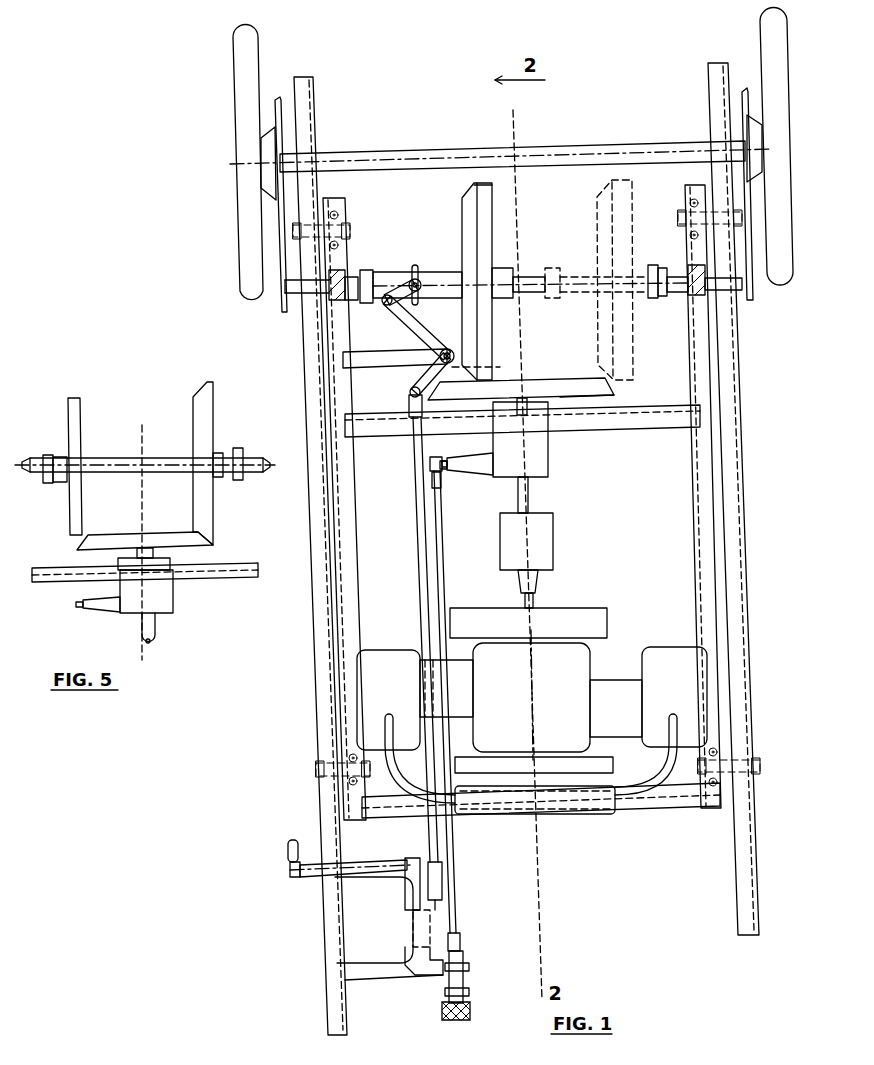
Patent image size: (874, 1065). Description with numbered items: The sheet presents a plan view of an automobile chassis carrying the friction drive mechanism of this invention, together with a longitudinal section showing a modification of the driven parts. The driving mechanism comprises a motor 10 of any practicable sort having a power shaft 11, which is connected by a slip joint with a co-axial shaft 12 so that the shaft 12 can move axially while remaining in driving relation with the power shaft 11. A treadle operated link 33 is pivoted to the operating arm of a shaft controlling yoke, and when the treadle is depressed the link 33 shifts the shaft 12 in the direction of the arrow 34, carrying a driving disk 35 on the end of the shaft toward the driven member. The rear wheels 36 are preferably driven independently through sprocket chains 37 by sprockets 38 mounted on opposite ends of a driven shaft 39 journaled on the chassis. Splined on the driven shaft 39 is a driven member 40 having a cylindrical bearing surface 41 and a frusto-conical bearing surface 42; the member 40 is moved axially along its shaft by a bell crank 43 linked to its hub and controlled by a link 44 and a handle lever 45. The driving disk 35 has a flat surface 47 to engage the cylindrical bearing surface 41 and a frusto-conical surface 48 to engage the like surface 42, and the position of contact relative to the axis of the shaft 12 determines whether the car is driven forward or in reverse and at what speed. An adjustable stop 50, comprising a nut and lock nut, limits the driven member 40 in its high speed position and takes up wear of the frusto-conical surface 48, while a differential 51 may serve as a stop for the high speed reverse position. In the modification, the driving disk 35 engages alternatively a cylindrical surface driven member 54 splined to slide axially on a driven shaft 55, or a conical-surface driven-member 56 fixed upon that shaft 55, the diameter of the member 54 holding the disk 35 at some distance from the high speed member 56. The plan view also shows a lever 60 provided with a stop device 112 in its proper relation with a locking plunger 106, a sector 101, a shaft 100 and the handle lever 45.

In FIG. 1, the motor 10 is at (572, 665).
In FIG. 1, the power shaft 11 is at (540, 603).
In FIG. 1, the shaft 12 is at (520, 488).
In FIG. 1, the treadle operated link 33 is at (444, 557).
In FIG. 1, the arrow 34 is at (545, 480).
In FIG. 1, the driving disk 35 is at (560, 390).
In FIG. 5, the driving disk 35 is at (162, 535).
In FIG. 1, the rear wheels 36 is at (232, 62).
In FIG. 1, the sprocket chains 37 is at (276, 247).
In FIG. 1, the sprockets 38 is at (283, 313).
In FIG. 1, the driven shaft 39 is at (530, 278).
In FIG. 1, the driven member 40 is at (462, 210).
In FIG. 1, the cylindrical bearing surface 41 is at (483, 182).
In FIG. 1, the frusto-conical bearing surface 42 is at (470, 233).
In FIG. 1, the bell crank 43 is at (413, 322).
In FIG. 1, the link 44 is at (421, 490).
In FIG. 1, the handle lever 45 is at (290, 845).
In FIG. 1, the flat surface 47 is at (533, 382).
In FIG. 1, the frusto-conical surface 48 is at (625, 394).
In FIG. 1, the stop 50 is at (654, 266).
In FIG. 1, the differential 51 is at (367, 271).
In FIG. 5, the cylindrical surface driven member 54 is at (73, 398).
In FIG. 5, the driven shaft 55 is at (118, 458).
In FIG. 5, the conical-surface driven-member 56 is at (211, 412).
In FIG. 1, the lever 60 is at (461, 985).
In FIG. 1, the shaft 100 is at (318, 876).
In FIG. 1, the sector 101 is at (425, 891).
In FIG. 1, the locking plunger 106 is at (435, 925).
In FIG. 1, the stop device 112 is at (389, 955).